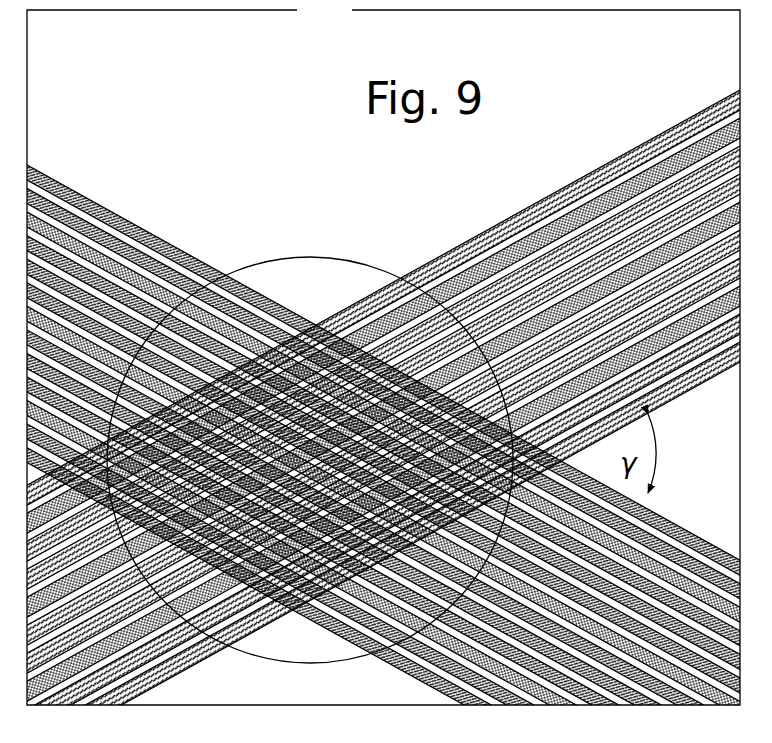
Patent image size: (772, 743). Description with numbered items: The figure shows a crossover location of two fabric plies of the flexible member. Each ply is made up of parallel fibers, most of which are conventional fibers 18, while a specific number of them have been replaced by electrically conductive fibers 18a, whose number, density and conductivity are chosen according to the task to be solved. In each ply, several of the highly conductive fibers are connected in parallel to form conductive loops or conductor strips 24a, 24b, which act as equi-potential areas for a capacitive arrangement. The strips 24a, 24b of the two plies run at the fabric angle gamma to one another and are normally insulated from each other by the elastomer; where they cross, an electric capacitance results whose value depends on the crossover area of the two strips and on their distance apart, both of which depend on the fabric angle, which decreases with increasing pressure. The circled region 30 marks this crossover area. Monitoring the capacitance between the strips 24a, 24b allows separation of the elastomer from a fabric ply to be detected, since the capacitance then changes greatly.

The conventional fibers 18 is at (200, 262).
The conductive fibers 18a is at (120, 256).
The conductive loop 24a is at (119, 204).
The conductive loop 24b is at (643, 134).
The circle (detail region) 30 is at (303, 256).